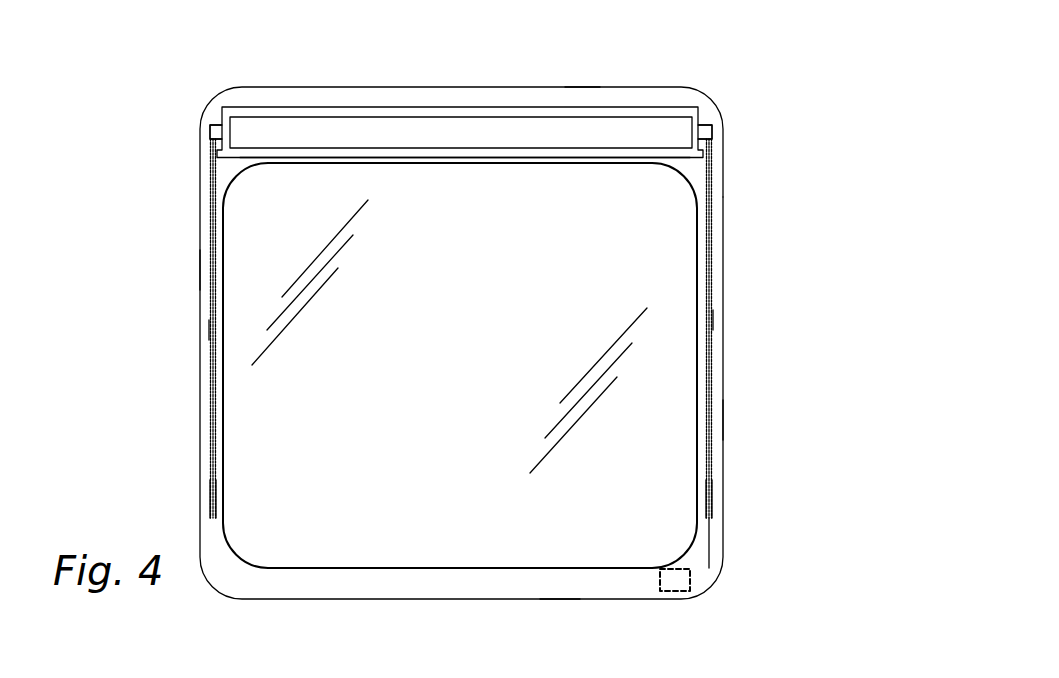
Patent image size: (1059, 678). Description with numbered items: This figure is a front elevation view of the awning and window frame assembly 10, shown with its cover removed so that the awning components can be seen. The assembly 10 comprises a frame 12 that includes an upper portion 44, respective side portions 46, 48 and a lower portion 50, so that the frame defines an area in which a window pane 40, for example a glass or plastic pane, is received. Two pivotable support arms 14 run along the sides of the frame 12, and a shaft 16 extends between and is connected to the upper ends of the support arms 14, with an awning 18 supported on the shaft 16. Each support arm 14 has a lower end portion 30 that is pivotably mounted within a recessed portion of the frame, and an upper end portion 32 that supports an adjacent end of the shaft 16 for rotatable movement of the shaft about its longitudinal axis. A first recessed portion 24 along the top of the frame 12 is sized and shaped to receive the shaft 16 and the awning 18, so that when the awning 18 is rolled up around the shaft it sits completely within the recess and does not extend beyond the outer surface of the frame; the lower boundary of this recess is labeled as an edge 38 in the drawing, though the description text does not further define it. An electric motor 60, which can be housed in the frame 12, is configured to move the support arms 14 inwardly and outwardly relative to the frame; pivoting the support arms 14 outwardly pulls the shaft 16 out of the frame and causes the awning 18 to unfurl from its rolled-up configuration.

The assembly 10 is at (672, 60).
The frame 12 is at (722, 197).
The support arms 14 is at (209, 333).
The shaft 16 is at (217, 127).
The awning 18 is at (413, 128).
The first recessed portion 24 is at (313, 112).
The lower end portion 30 is at (212, 495).
The upper end portion 32 is at (212, 137).
The lower edge 38 is at (385, 158).
The window pane 40 is at (476, 359).
The upper portion 44 is at (565, 82).
The side portion 46 is at (199, 264).
The side portion 48 is at (723, 417).
The lower portion 50 is at (545, 603).
The electric motor 60 is at (690, 582).